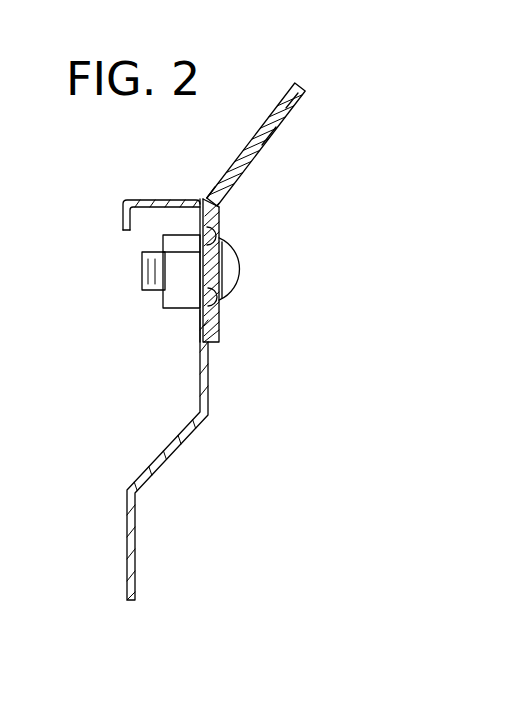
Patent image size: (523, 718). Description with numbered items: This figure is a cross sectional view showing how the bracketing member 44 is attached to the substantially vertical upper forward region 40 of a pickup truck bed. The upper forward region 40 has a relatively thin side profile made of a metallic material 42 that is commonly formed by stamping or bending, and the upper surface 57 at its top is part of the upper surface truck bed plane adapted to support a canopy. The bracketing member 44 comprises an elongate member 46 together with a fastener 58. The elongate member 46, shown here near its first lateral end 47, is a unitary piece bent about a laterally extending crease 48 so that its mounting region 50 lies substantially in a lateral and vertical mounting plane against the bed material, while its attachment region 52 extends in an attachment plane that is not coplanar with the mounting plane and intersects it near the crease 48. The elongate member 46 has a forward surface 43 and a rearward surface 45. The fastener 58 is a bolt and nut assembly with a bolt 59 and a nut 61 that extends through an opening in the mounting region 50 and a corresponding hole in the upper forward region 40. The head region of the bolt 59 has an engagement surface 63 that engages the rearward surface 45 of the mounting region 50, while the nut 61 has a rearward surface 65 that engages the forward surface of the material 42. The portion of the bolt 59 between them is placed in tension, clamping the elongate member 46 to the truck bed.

The upper forward region 40 is at (231, 420).
The metallic material 42 is at (201, 382).
The forward surface 43 is at (212, 190).
The bracketing member 44 is at (312, 66).
The rearward surface 45 is at (221, 328).
The elongate member 46 is at (292, 104).
The first lateral end 47 is at (198, 318).
The crease 48 is at (221, 205).
The mounting region 50 is at (221, 224).
The attachment region 52 is at (264, 145).
The upper surface 57 is at (165, 200).
The fastener 58 is at (236, 256).
The bolt 59 is at (234, 276).
The nut 61 is at (172, 298).
The engagement surface 63 is at (221, 318).
The rearward surface 65 is at (200, 228).